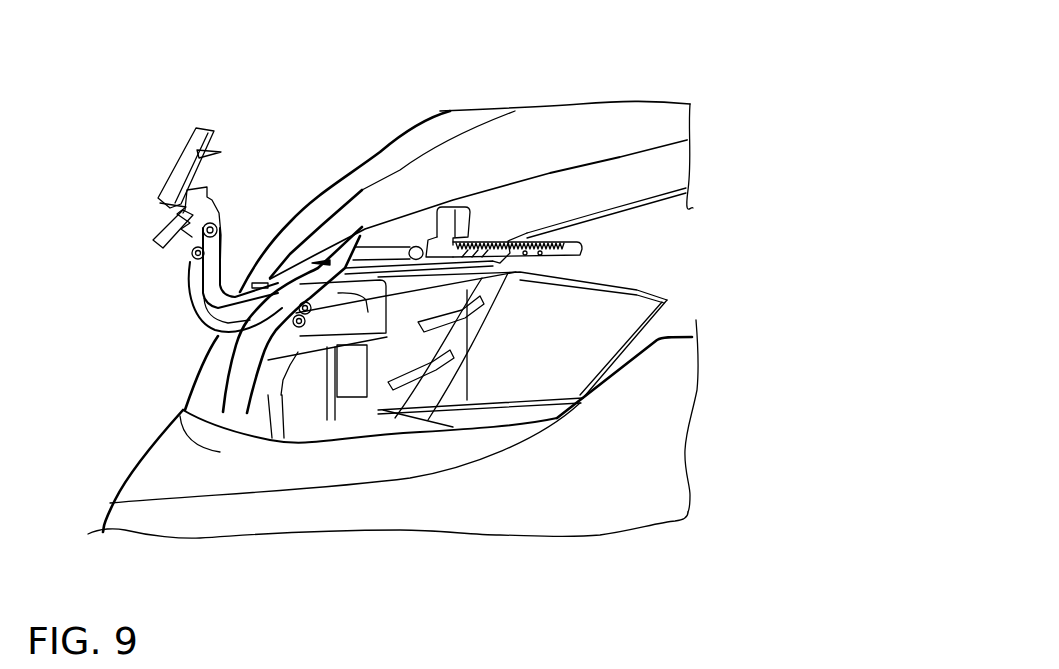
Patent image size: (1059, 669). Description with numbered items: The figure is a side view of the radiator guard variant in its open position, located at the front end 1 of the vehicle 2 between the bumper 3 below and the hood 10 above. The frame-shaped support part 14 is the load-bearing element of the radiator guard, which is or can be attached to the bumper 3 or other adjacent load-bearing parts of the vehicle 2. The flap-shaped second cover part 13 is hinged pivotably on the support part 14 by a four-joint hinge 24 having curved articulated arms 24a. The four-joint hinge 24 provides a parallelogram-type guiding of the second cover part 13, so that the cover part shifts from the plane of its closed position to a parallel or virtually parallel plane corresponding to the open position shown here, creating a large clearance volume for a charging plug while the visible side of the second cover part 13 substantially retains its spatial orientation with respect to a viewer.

The front end 1 is at (314, 143).
The vehicle 2 is at (445, 249).
The bumper 3 is at (448, 527).
The hood 10 is at (630, 103).
The second cover part 13 is at (175, 138).
The support part 14 is at (476, 227).
The four-joint hinge 24 is at (183, 307).
The curved articulated arms 24a is at (193, 302).